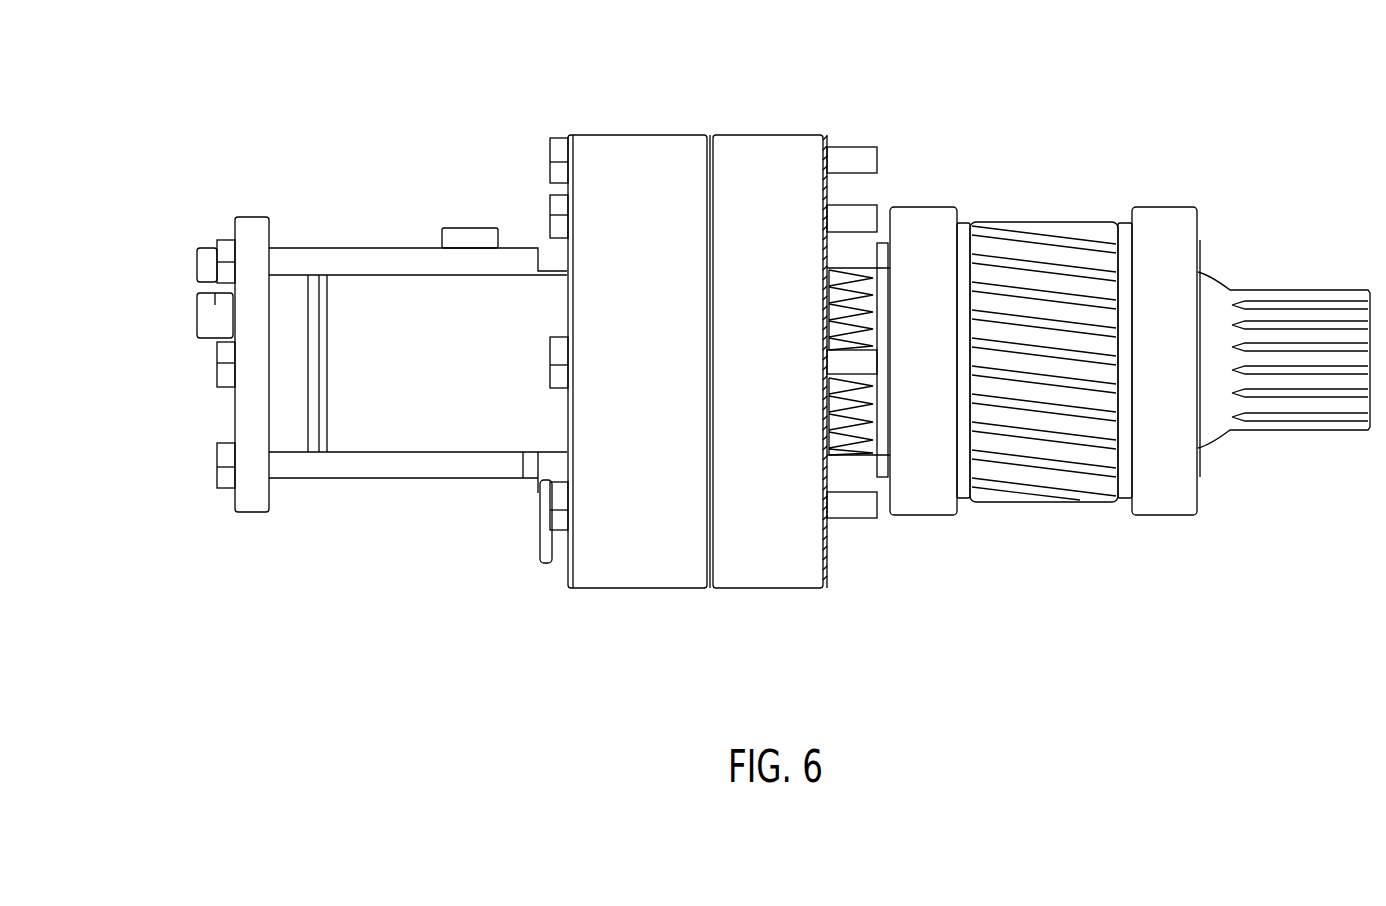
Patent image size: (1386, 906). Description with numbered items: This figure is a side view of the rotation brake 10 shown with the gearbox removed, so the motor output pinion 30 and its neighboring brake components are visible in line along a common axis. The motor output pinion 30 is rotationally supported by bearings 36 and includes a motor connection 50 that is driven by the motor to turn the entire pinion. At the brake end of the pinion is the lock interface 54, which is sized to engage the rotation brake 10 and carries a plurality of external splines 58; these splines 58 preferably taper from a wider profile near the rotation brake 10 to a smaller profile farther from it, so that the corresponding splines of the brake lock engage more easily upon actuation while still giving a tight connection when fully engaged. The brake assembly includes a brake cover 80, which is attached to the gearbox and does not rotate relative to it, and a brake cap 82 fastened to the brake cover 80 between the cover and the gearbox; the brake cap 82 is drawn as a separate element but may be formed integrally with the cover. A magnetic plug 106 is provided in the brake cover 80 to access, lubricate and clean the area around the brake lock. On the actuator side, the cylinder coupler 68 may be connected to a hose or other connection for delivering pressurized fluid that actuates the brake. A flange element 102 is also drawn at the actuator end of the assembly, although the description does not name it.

The rotation brake 10 is at (462, 98).
The motor output pinion 30 is at (1043, 503).
The bearings 36 is at (925, 208).
The motor connection 50 is at (1292, 290).
The lock interface 54 is at (880, 455).
The splines 58 is at (833, 453).
The cylinder coupler 68 is at (472, 227).
The brake cover 80 is at (640, 133).
The brake cap 82 is at (777, 133).
The mounting flange 102 is at (250, 487).
The magnetic plug 106 is at (540, 540).